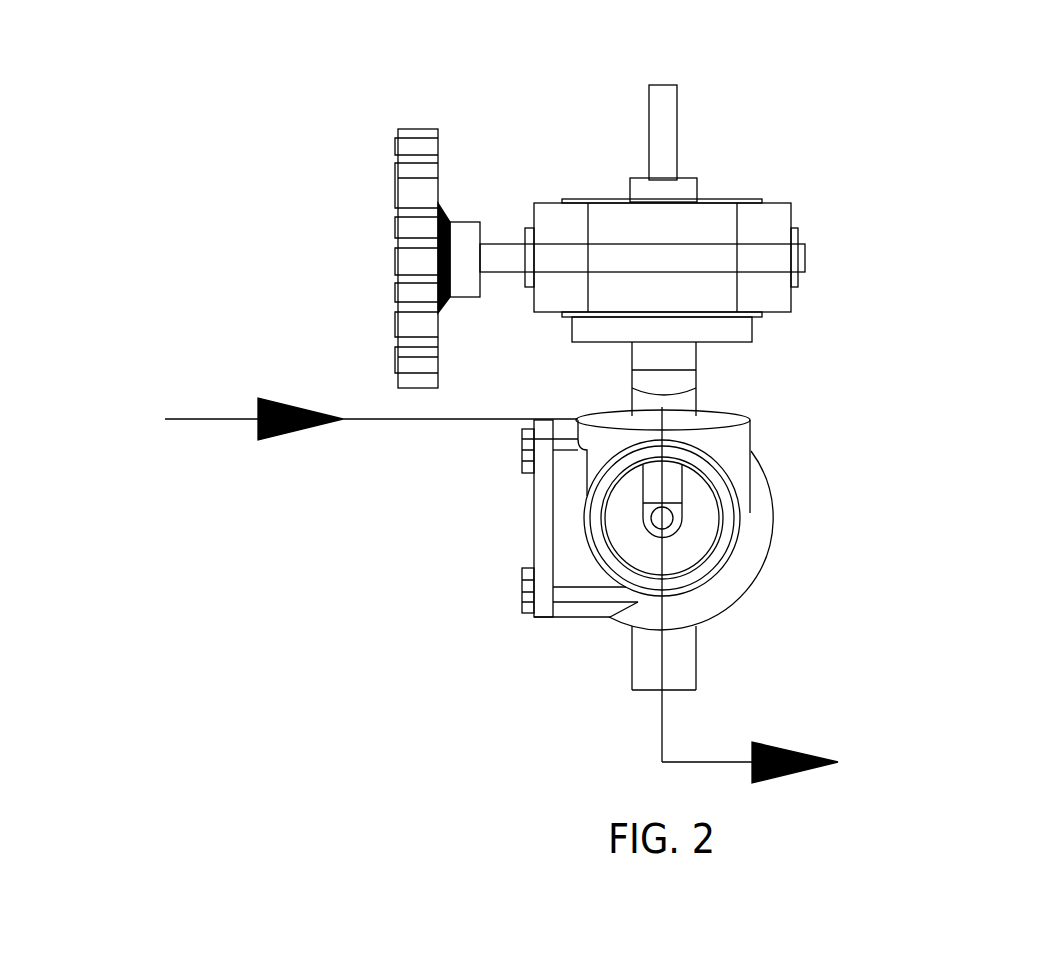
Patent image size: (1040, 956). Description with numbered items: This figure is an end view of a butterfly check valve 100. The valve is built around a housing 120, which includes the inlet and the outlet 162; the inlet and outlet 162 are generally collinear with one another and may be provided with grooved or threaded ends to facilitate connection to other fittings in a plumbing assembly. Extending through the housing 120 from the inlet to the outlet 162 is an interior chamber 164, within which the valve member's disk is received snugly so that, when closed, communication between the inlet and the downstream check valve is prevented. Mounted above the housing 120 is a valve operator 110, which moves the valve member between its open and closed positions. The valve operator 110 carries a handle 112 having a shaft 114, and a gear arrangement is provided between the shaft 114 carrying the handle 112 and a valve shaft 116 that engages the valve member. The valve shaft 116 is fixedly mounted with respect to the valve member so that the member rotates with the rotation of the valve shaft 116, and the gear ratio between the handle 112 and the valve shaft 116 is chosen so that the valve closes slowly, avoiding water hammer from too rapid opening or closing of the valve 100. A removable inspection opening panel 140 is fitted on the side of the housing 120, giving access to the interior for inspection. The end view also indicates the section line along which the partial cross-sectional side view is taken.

The butterfly check valve 100 is at (879, 190).
The valve operator 110 is at (606, 125).
The handle 112 is at (356, 219).
The shaft 114 is at (496, 211).
The valve shaft 116 is at (704, 515).
The housing 120 is at (810, 459).
The removable inspection opening panel 140 is at (473, 516).
The outlet 162 is at (702, 542).
The interior chamber 164 is at (623, 551).